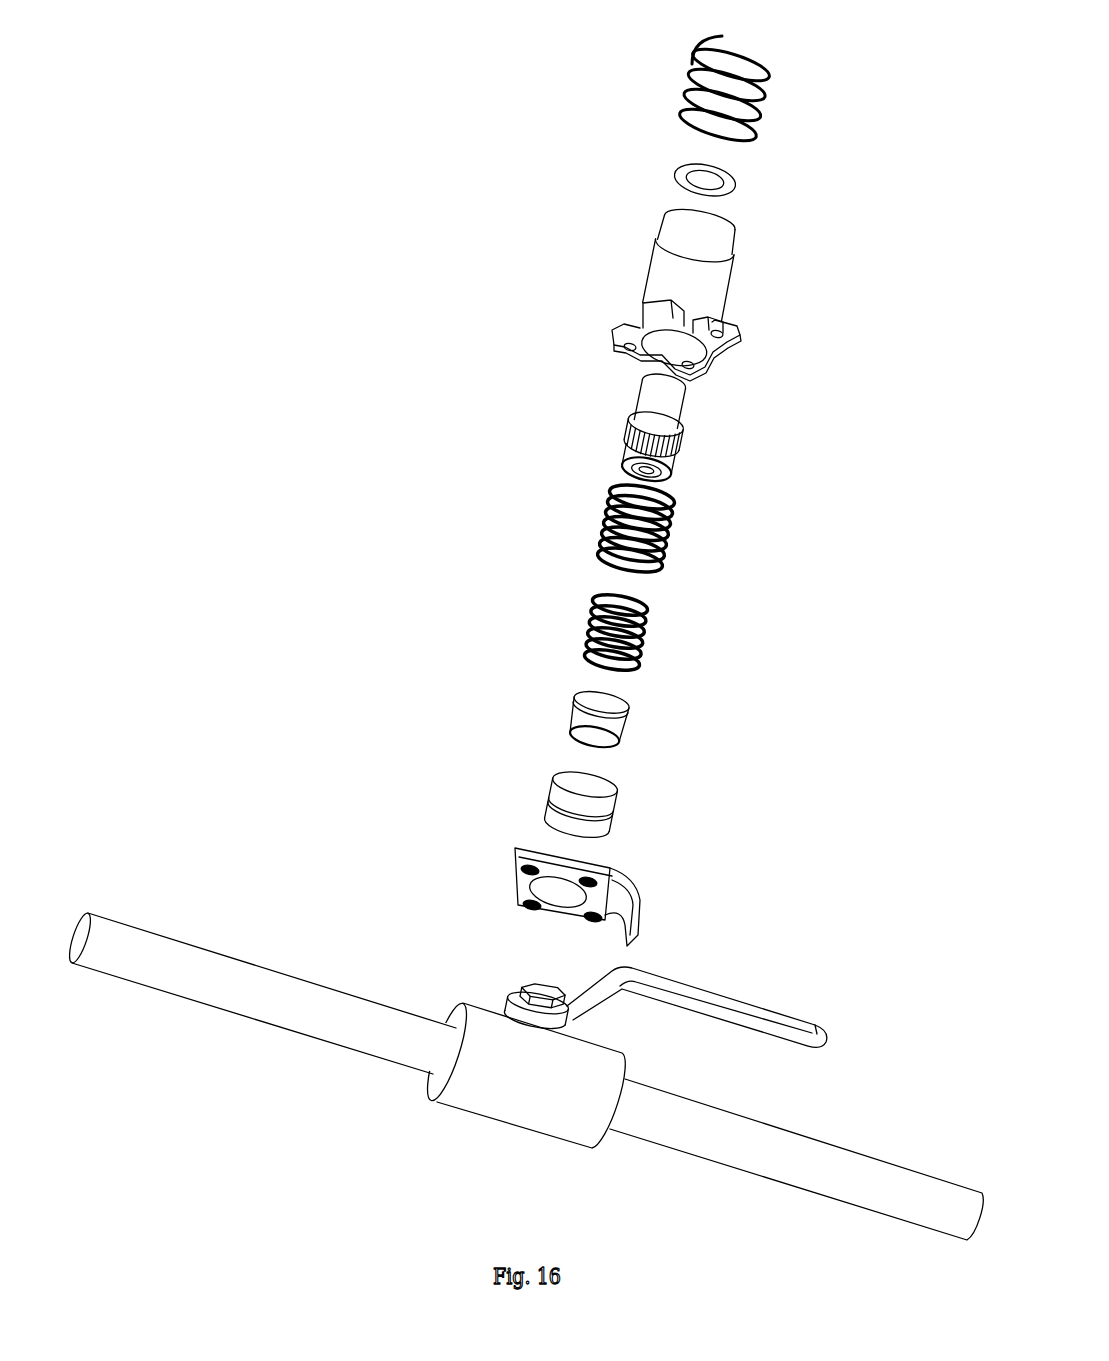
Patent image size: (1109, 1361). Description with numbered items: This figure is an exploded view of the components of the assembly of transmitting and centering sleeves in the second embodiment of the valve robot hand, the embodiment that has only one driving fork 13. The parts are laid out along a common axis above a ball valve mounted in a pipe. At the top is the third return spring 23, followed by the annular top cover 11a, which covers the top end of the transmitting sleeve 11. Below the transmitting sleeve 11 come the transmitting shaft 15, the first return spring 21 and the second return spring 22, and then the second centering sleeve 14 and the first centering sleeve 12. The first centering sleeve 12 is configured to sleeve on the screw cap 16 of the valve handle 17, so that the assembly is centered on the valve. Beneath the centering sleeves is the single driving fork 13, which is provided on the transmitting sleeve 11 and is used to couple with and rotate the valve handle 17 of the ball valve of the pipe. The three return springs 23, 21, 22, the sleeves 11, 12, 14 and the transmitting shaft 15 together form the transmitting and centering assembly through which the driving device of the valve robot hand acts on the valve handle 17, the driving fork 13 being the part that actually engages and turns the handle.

The third return spring 23 is at (690, 70).
The annular top cover 11a is at (678, 170).
The transmitting sleeve 11 is at (652, 281).
The transmitting shaft 15 is at (650, 415).
The first return spring 21 is at (612, 510).
The second return spring 22 is at (595, 612).
The second centering sleeve 14 is at (585, 725).
The first centering sleeve 12 is at (555, 784).
The driving fork 13 is at (520, 850).
The screw cap 16 is at (545, 990).
The valve handle 17 is at (758, 1022).